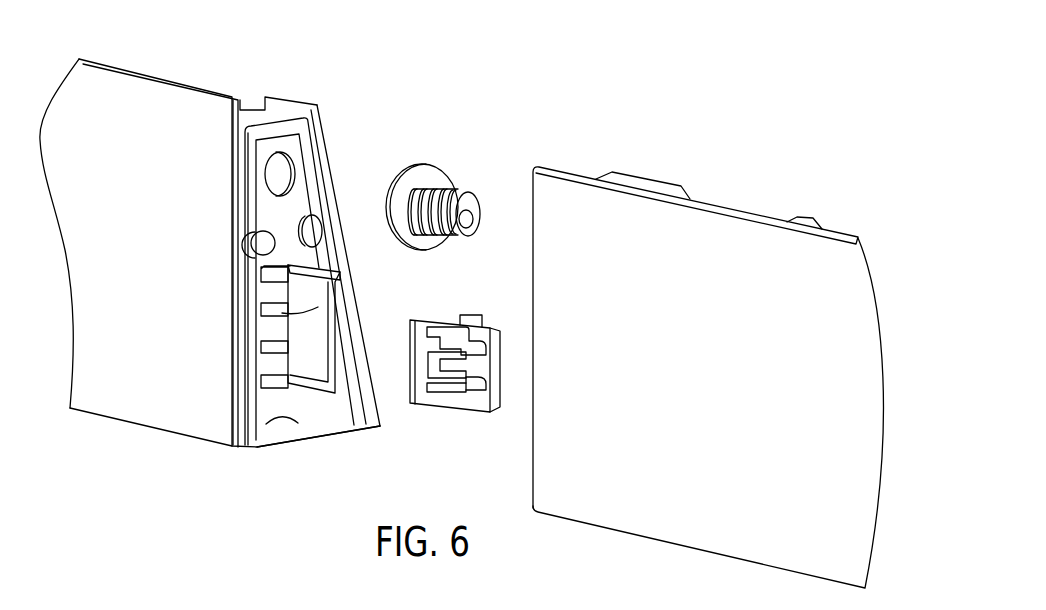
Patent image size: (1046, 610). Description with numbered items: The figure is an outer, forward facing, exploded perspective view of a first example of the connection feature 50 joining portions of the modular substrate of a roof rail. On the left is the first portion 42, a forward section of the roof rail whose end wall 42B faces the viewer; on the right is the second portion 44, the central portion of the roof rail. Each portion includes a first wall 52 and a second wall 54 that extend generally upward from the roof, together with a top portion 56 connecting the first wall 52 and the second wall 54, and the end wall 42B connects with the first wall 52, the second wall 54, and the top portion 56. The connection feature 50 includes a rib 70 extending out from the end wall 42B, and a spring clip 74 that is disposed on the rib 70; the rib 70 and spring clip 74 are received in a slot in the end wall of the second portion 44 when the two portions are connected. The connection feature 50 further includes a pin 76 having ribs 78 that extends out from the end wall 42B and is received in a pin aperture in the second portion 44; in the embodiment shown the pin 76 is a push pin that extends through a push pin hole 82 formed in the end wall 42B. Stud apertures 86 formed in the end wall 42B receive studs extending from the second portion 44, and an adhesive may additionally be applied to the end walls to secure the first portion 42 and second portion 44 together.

The first portion 42 is at (166, 78).
The end wall 42B is at (283, 428).
The second portion 44 is at (705, 166).
The connection feature 50 is at (411, 122).
The first wall 52 is at (237, 388).
The second wall 54 is at (381, 408).
The top portion 56 is at (263, 110).
The rib 70 is at (262, 309).
The spring clip 74 is at (462, 321).
The pin 76 is at (471, 219).
The ribs 78 is at (458, 190).
The push pin hole 82 is at (290, 163).
The stud apertures 86 is at (276, 235).